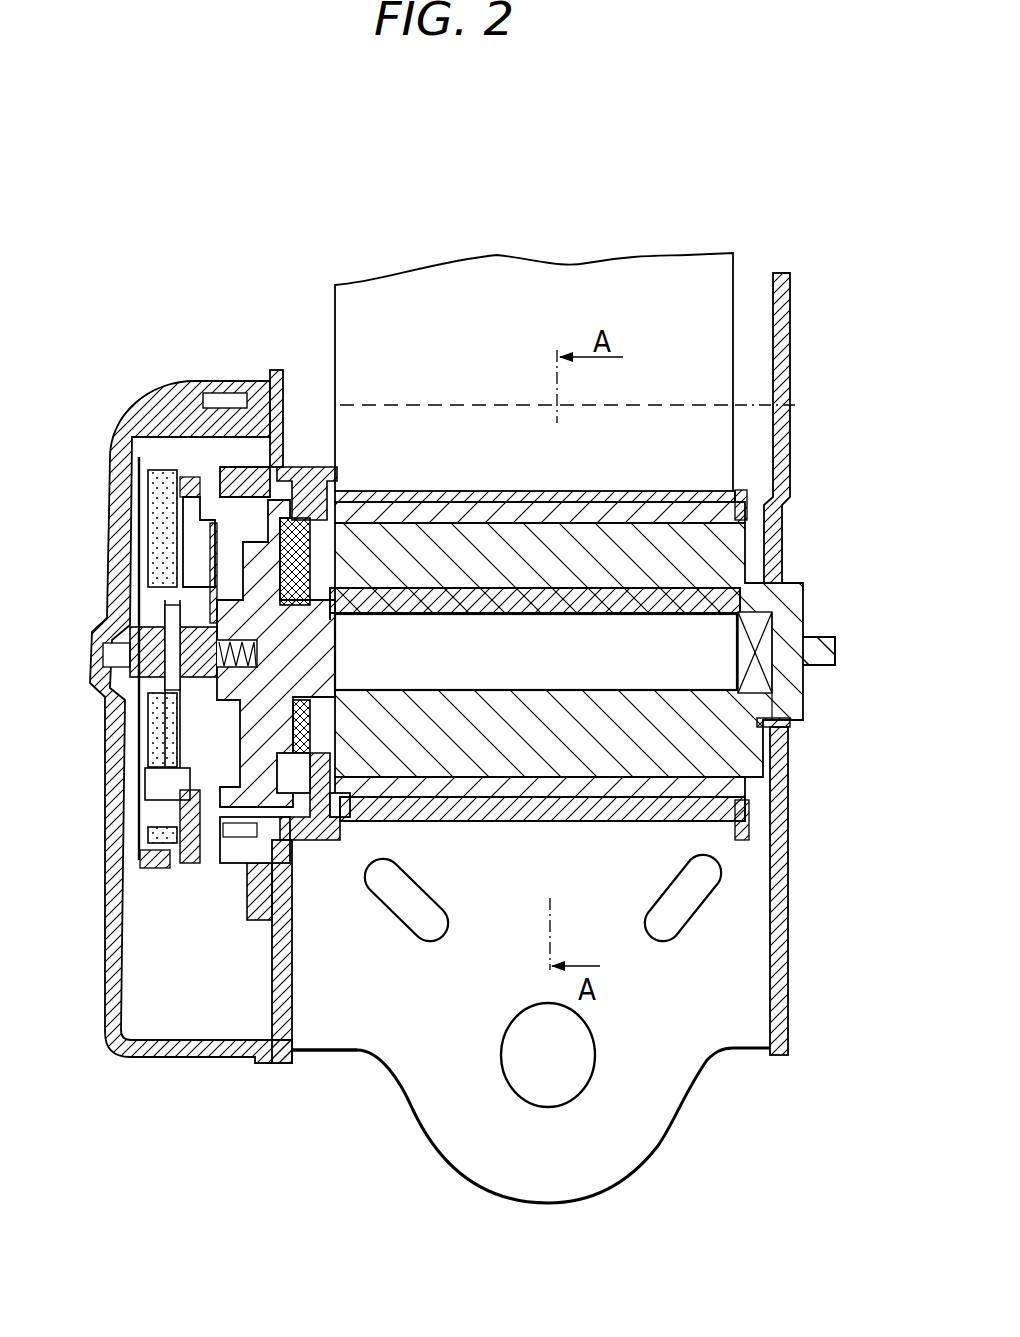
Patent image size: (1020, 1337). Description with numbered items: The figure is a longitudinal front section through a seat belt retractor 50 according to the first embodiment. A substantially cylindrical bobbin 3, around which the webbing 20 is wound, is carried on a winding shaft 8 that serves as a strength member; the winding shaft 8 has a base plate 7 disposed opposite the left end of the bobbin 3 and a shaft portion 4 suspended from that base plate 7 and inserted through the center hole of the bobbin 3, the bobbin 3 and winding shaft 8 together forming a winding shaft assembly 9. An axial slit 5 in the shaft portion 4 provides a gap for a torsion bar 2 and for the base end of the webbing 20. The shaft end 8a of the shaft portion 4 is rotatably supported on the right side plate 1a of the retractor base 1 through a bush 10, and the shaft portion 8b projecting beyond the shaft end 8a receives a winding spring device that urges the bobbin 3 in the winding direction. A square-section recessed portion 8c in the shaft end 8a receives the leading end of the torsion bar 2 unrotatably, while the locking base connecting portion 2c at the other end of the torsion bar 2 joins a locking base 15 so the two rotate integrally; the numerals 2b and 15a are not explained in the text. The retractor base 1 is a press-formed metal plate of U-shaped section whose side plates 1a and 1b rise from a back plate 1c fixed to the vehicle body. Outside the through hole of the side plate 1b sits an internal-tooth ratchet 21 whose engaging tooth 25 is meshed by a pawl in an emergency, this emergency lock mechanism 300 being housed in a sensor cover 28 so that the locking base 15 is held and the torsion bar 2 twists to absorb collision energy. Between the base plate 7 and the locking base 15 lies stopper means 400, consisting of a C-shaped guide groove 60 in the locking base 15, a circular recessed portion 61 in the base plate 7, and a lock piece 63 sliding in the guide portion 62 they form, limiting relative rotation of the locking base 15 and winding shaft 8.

The retractor base 1 is at (724, 1079).
The side plate 1a is at (792, 915).
The side plate 1b is at (292, 1018).
The back plate 1c is at (640, 1117).
The torsion bar 2 is at (408, 625).
The bobbin flange 2b is at (400, 728).
The locking base connecting portion 2c is at (255, 860).
The bobbin 3 is at (618, 520).
The shaft portion 4 is at (480, 535).
The slit 5 is at (528, 693).
The base plate 7 is at (303, 468).
The winding shaft 8 is at (393, 545).
The shaft end 8a is at (793, 612).
The shaft portion 8b is at (837, 650).
The recessed portion 8c is at (600, 826).
The winding shaft assembly 9 is at (588, 828).
The bush 10 is at (792, 727).
The locking base 15 is at (257, 533).
The rotor hub 15a is at (340, 600).
The webbing 20 is at (655, 285).
The internal-tooth ratchet 21 is at (228, 450).
The engaging tooth 25 is at (233, 858).
The sensor cover 28 is at (177, 403).
The retractor 50 is at (437, 288).
The guide groove 60 is at (265, 705).
The recessed portion 61 is at (330, 715).
The guide portion 62 is at (370, 938).
The lock piece 63 is at (362, 492).
The emergency lock mechanism 300 is at (98, 508).
The stopper means 400 is at (323, 470).